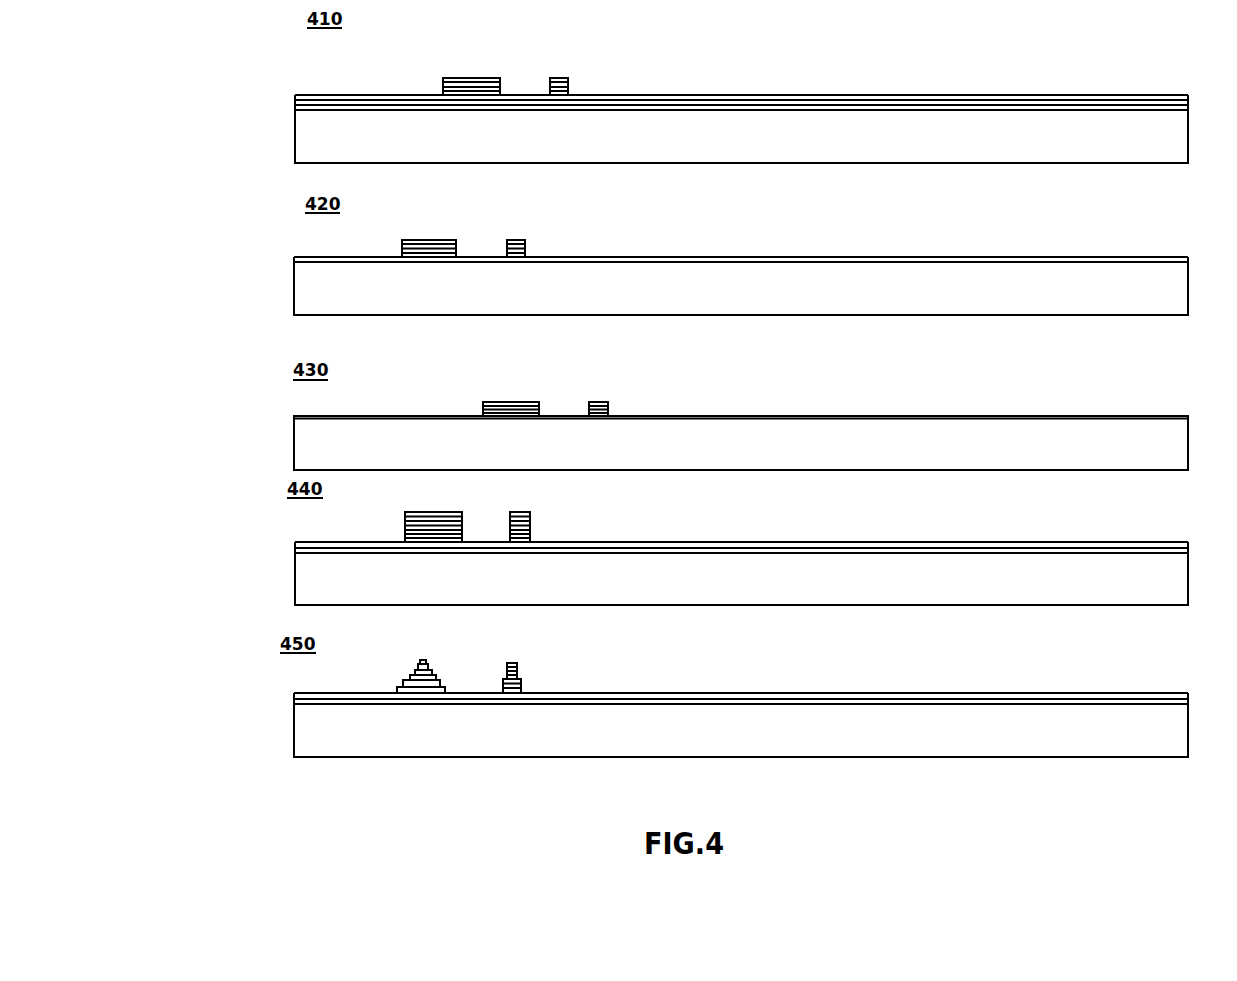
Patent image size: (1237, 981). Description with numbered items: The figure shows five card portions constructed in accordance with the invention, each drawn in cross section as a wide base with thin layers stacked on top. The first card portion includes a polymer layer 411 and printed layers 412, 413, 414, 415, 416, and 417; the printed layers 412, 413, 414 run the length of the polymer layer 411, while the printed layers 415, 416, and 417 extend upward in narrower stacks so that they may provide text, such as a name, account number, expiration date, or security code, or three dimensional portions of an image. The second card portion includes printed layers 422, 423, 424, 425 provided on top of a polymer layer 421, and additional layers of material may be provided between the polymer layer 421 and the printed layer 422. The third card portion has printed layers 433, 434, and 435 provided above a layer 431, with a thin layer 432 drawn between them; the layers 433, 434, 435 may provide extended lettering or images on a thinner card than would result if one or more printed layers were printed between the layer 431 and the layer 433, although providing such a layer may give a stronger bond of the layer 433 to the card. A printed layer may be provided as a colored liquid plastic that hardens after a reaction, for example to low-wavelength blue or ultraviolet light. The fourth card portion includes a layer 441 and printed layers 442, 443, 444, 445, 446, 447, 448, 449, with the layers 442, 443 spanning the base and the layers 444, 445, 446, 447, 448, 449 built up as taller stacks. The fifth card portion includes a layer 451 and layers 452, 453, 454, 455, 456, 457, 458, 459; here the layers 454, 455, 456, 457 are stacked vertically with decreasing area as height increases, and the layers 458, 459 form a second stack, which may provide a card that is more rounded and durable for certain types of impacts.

The polymer layer 411 is at (295, 150).
The printed layer 412 is at (295, 107).
The printed layer 413 is at (295, 99).
The printed layer 414 is at (320, 95).
The printed layer 415 is at (443, 93).
The printed layer 416 is at (443, 80).
The printed layer 417 is at (469, 78).
The polymer layer 421 is at (388, 315).
The printed layer 422 is at (294, 257).
The printed layer 423 is at (402, 253).
The printed layer 424 is at (402, 248).
The printed layer 425 is at (430, 240).
The layer 431 is at (400, 470).
The layer 432 is at (323, 416).
The printed layer 433 is at (483, 414).
The printed layer 434 is at (483, 403).
The printed layer 435 is at (510, 402).
The layer 441 is at (295, 598).
The printed layer 442 is at (295, 547).
The printed layer 443 is at (295, 543).
The printed layer 444 is at (405, 536).
The printed layer 445 is at (405, 521).
The printed layer 446 is at (405, 515).
The printed layer 447 is at (432, 512).
The printed layer 448 is at (462, 538).
The printed layer 449 is at (462, 531).
The layer 451 is at (294, 748).
The layer 452 is at (294, 697).
The layer 453 is at (294, 693).
The layer 454 is at (402, 690).
The layer 455 is at (410, 677).
The layer 456 is at (413, 670).
The layer 457 is at (427, 660).
The layer 458 is at (443, 683).
The layer 459 is at (443, 687).